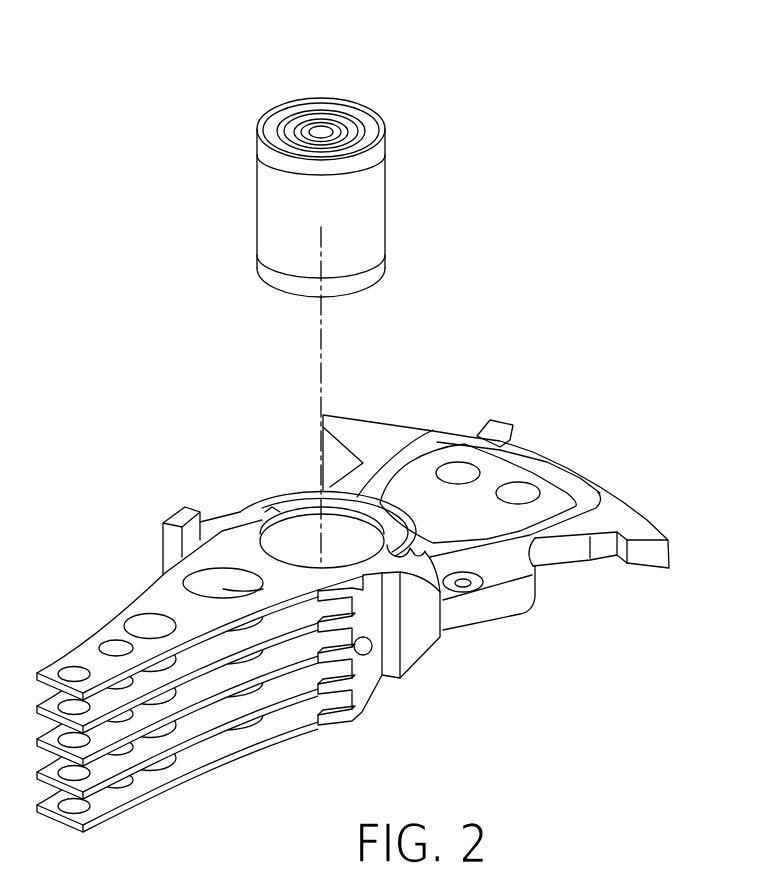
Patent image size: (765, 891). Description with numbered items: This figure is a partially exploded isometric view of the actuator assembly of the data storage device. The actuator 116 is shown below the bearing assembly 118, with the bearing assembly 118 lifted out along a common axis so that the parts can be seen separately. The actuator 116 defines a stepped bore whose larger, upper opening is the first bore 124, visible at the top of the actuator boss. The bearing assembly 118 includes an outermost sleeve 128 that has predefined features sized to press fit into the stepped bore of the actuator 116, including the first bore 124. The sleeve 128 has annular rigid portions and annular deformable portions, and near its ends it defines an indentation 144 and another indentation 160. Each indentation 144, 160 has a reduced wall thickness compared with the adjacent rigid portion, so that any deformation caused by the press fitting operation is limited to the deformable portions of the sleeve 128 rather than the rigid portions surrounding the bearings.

The actuator 116 is at (171, 406).
The bearing assembly 118 is at (208, 58).
The first bore 124 is at (292, 533).
The sleeve 128 is at (365, 220).
The indentation 144 is at (243, 243).
The indentation 160 is at (237, 144).